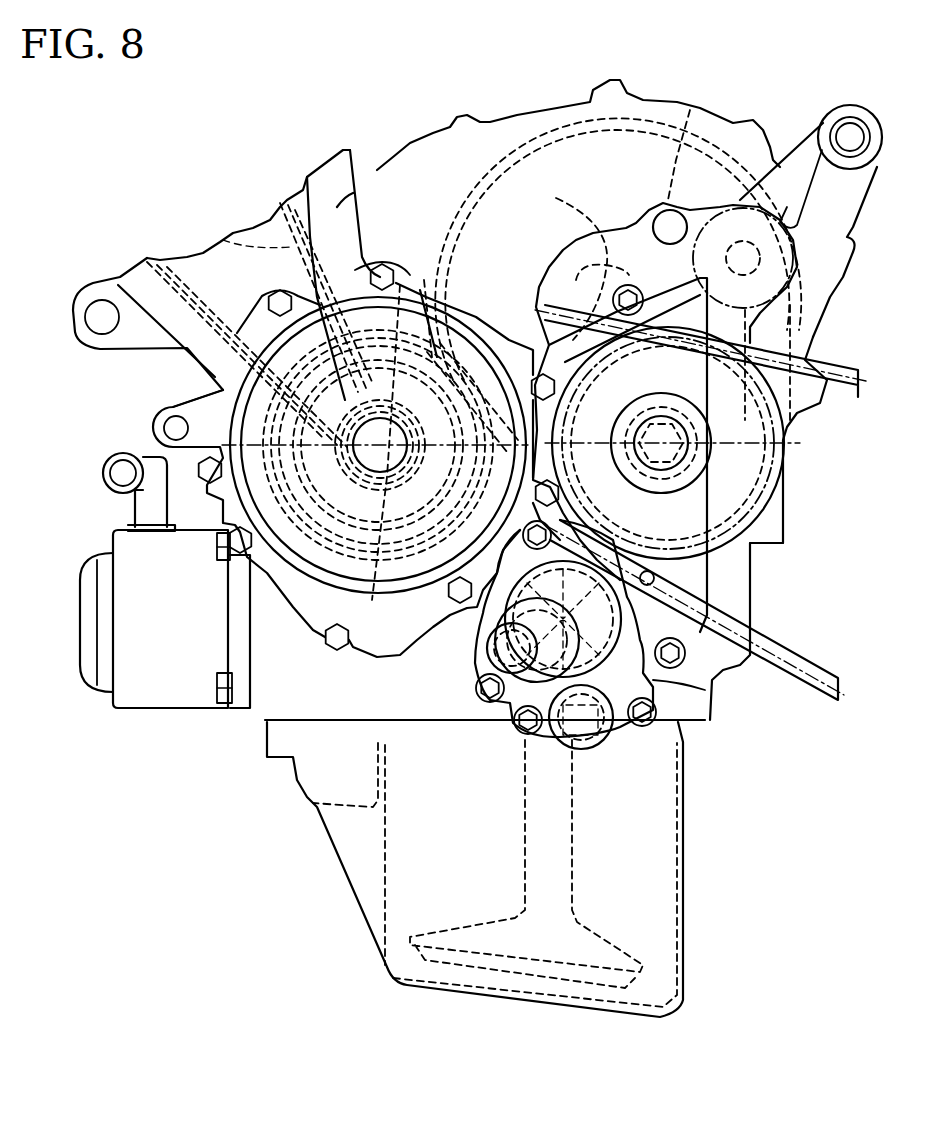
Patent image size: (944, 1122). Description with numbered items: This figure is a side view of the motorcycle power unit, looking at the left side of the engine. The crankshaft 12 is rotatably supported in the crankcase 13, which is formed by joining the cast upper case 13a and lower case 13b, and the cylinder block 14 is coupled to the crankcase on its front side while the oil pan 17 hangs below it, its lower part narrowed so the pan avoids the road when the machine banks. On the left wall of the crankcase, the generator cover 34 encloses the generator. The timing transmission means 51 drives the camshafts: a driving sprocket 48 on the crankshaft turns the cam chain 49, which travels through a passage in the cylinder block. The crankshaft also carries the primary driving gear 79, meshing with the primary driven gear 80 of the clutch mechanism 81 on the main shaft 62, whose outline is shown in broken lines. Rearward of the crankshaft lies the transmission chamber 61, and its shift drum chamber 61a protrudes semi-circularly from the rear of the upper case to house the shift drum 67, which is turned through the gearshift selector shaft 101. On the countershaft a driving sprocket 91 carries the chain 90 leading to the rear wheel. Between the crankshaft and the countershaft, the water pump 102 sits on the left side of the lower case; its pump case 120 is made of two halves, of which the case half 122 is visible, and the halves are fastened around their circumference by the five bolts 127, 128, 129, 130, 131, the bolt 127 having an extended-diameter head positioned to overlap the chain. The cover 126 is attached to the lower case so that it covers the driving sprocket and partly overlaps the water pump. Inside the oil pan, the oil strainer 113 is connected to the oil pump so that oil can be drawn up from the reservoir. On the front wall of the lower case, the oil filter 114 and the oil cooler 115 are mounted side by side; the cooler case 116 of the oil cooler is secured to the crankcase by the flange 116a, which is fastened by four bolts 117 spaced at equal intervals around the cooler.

The crankshaft 12 is at (381, 453).
The crankcase 13 is at (843, 420).
The upper case 13a is at (787, 417).
The lower case 13b is at (773, 490).
The cylinder block 14 is at (337, 207).
The oil pan 17 is at (343, 843).
The generator cover 34 is at (227, 390).
The driving sprocket 48 is at (303, 337).
The cam chain 49 is at (225, 240).
The timing transmission means 51 is at (307, 190).
The transmission chamber 61 is at (637, 232).
The shift drum chamber 61a is at (830, 343).
The main shaft 62 is at (557, 197).
The shift drum 67 is at (683, 265).
The primary driving gear 79 is at (399, 355).
The primary driven gear 80 is at (530, 140).
The clutch mechanism 81 is at (493, 163).
The chain 90 is at (767, 637).
The driving sprocket 91 is at (727, 540).
The gearshift selector shaft 101 is at (690, 110).
The water pump 102 is at (470, 673).
The oil strainer 113 is at (577, 883).
The oil filter 114 is at (103, 667).
The oil cooler 115 is at (193, 634).
The cooler case 116 is at (160, 683).
The flange 116a is at (242, 700).
The bolts 117 is at (220, 547).
The pump case 120 is at (650, 680).
The case half 122 is at (483, 618).
The cover 126 is at (536, 303).
The bolt 127 is at (647, 570).
The bolt 128 is at (530, 737).
The bolt 129 is at (563, 530).
The bolt 130 is at (643, 727).
The bolt 131 is at (492, 700).